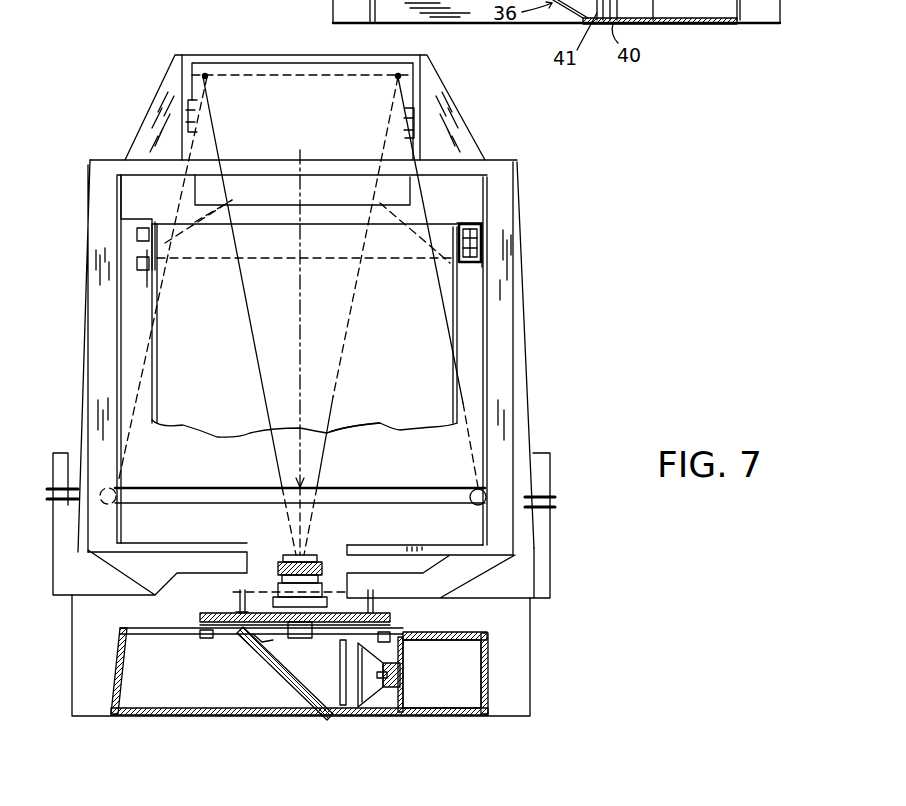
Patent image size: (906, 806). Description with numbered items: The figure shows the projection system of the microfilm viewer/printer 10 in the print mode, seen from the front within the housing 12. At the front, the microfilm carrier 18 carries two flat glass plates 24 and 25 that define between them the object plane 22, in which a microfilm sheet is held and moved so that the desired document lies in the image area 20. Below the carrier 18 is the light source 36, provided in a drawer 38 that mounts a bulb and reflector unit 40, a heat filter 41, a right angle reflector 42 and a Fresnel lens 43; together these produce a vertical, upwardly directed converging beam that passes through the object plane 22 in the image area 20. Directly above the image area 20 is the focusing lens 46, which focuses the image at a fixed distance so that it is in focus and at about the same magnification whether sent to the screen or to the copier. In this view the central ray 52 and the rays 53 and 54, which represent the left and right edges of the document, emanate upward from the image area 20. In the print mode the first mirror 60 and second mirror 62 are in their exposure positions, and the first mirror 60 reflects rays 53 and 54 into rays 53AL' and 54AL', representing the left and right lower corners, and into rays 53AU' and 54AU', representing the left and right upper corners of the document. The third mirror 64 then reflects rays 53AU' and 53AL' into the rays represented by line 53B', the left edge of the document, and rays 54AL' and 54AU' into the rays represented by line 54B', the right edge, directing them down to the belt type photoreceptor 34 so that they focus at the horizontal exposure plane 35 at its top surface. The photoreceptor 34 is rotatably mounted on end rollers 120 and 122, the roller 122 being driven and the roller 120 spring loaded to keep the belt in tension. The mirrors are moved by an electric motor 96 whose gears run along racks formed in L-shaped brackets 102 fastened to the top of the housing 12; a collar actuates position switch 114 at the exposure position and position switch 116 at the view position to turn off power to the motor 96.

The viewer/printer 10 is at (538, 178).
The housing 12 is at (470, 118).
The microfilm carrier 18 is at (395, 620).
The image area 20 is at (297, 625).
The object plane 22 is at (240, 614).
The flat glass plate 24 is at (240, 600).
The flat glass plate 25 is at (372, 605).
The photoreceptor 34 is at (372, 508).
The exposure plane 35 is at (355, 488).
The light source 36 is at (395, 723).
The drawer 38 is at (453, 643).
The bulb and reflector unit 40 is at (360, 708).
The heat filter 41 is at (338, 715).
The right angle reflector 42 is at (290, 677).
The Fresnel lens 43 is at (273, 662).
The focusing lens 46 is at (272, 557).
The central ray 52 is at (302, 330).
The ray 53 is at (257, 385).
The ray 54 is at (335, 395).
The ray 53AU' is at (218, 44).
The ray 54AU' is at (359, 56).
The ray 53AL' is at (243, 165).
The ray 54AL' is at (415, 249).
The line 53B' is at (112, 280).
The line 54B' is at (501, 282).
The first mirror 60 is at (283, 205).
The second mirror 62 is at (398, 428).
The third mirror 64 is at (222, 223).
The electric motor 96 is at (480, 240).
The L-shaped bracket 102 is at (133, 176).
The position switch 114 is at (137, 234).
The position switch 116 is at (137, 265).
The end roller 120 is at (125, 484).
The end roller 122 is at (467, 487).